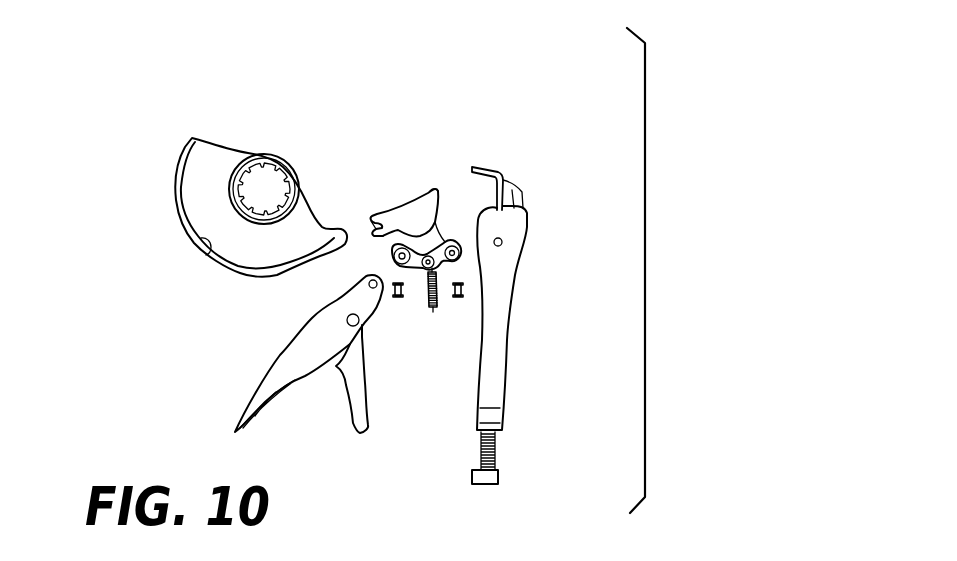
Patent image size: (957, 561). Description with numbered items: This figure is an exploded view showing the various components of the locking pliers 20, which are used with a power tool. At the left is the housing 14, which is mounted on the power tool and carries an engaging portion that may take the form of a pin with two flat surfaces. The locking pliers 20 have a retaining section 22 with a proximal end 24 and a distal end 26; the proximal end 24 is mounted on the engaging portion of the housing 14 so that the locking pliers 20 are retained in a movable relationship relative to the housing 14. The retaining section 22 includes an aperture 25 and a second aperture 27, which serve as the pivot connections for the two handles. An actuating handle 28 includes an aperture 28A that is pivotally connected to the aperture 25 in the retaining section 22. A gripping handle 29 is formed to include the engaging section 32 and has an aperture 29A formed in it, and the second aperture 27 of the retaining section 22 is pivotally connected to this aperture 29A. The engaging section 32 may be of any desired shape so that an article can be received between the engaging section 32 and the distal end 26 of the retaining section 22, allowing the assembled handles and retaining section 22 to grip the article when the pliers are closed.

The housing 14 is at (205, 255).
The locking pliers 20 is at (527, 307).
The retaining section 22 is at (405, 207).
The proximal end 24 is at (376, 229).
The distal end 26 is at (437, 189).
The aperture 25 is at (403, 266).
The second aperture 27 is at (437, 267).
The actuating handle 28 is at (297, 375).
The aperture 28A is at (362, 289).
The gripping handle 29 is at (497, 323).
The aperture 29A is at (503, 242).
The engaging section 32 is at (505, 168).